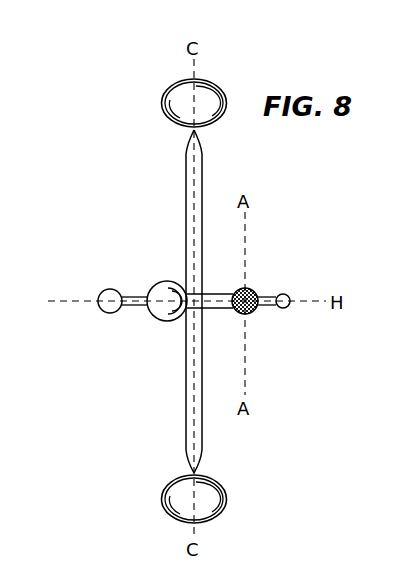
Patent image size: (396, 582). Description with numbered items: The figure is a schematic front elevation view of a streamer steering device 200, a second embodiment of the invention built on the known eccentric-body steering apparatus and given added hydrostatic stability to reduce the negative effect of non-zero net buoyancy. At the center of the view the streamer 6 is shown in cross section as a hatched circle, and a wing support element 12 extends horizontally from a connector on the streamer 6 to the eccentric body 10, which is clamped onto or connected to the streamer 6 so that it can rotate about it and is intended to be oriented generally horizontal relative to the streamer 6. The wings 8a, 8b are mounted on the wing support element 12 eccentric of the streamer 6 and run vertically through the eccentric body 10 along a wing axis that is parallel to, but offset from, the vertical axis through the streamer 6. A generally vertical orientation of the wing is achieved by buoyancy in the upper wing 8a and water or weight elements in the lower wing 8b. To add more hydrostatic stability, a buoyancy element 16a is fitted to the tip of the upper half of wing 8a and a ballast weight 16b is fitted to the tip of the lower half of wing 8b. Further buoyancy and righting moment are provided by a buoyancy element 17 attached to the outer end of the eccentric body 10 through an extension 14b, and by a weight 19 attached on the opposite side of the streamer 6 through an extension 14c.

The streamer steering device 200 is at (120, 151).
The buoyancy element 16a is at (162, 101).
The ballast weight 16b is at (162, 504).
The wing 8a is at (186, 206).
The wing 8b is at (186, 405).
The buoyancy element 17 is at (104, 291).
The extension 14b is at (132, 306).
The eccentric body 10 is at (158, 320).
The wing support element 12 is at (224, 291).
The streamer 6 is at (249, 314).
The extension 14c is at (267, 308).
The weight 19 is at (285, 294).